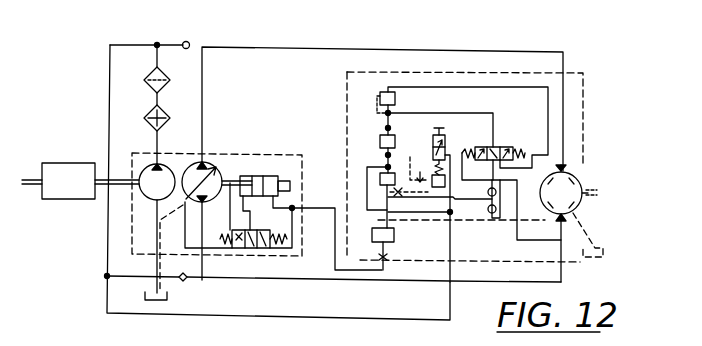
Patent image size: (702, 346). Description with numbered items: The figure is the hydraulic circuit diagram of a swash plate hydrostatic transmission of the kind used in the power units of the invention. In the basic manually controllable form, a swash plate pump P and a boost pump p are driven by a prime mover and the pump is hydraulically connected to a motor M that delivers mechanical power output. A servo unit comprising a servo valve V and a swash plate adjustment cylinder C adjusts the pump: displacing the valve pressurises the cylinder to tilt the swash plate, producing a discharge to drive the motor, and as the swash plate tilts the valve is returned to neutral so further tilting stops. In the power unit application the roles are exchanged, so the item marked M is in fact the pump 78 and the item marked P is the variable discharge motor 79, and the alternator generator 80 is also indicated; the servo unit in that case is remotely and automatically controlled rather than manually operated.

The pump 78 is at (577, 178).
The variable discharge motor 79 is at (210, 164).
The alternator generator 80 is at (76, 152).